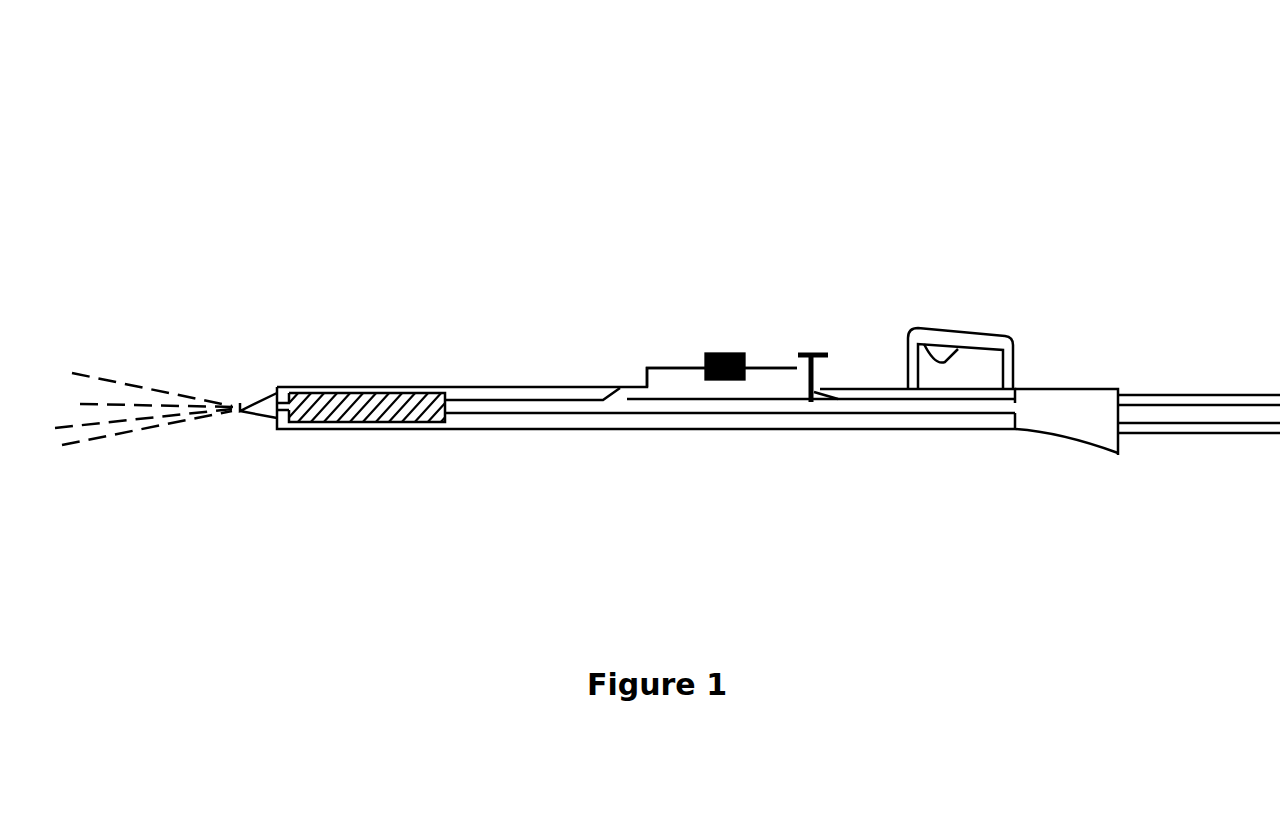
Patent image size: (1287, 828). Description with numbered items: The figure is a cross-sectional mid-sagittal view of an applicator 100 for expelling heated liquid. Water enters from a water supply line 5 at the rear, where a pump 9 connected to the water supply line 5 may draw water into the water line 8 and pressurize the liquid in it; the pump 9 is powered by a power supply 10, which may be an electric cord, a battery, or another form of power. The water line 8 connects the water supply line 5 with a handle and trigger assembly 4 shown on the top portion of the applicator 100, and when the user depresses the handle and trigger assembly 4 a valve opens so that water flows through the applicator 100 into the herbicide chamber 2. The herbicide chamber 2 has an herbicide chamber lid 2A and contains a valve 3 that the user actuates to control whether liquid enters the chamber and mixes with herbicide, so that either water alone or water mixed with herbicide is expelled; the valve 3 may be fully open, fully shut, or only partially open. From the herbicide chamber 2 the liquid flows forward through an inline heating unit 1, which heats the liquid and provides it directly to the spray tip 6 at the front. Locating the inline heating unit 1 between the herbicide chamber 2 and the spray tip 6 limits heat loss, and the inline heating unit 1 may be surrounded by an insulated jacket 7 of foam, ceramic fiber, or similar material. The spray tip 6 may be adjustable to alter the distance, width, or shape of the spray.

The applicator 100 is at (460, 96).
The inline heating unit 1 is at (392, 390).
The herbicide chamber 2 is at (690, 375).
The herbicide chamber lid 2A is at (733, 340).
The valve 3 is at (819, 338).
The handle and trigger assembly 4 is at (1016, 327).
The water supply line 5 is at (1159, 379).
The spray tip 6 is at (256, 431).
The insulated jacket 7 is at (400, 438).
The water line 8 is at (849, 427).
The pump 9 is at (1092, 453).
The power supply 10 is at (1239, 449).